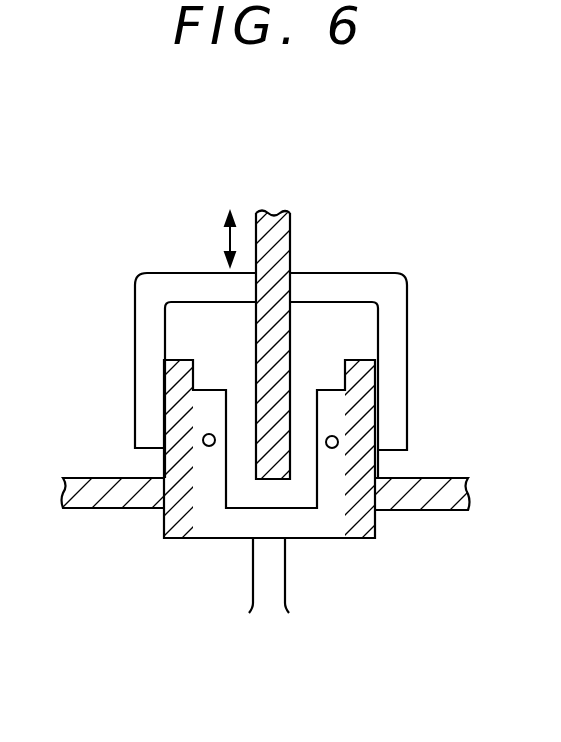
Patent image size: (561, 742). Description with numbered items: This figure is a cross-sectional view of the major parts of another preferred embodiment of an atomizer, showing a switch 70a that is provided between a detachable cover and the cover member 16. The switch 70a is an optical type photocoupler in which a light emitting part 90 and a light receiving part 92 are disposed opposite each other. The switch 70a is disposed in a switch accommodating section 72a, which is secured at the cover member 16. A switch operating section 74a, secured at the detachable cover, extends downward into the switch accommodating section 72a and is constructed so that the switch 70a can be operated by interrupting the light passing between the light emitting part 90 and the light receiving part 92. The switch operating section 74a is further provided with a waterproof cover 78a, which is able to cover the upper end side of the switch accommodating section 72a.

The switch operating section 74a is at (293, 226).
The waterproof cover 78a is at (390, 337).
The switch accommodating section 72a is at (176, 410).
The light emitting part 90 is at (338, 438).
The cover member 16 is at (445, 487).
The light receiving part 92 is at (165, 504).
The switch 70a is at (243, 512).